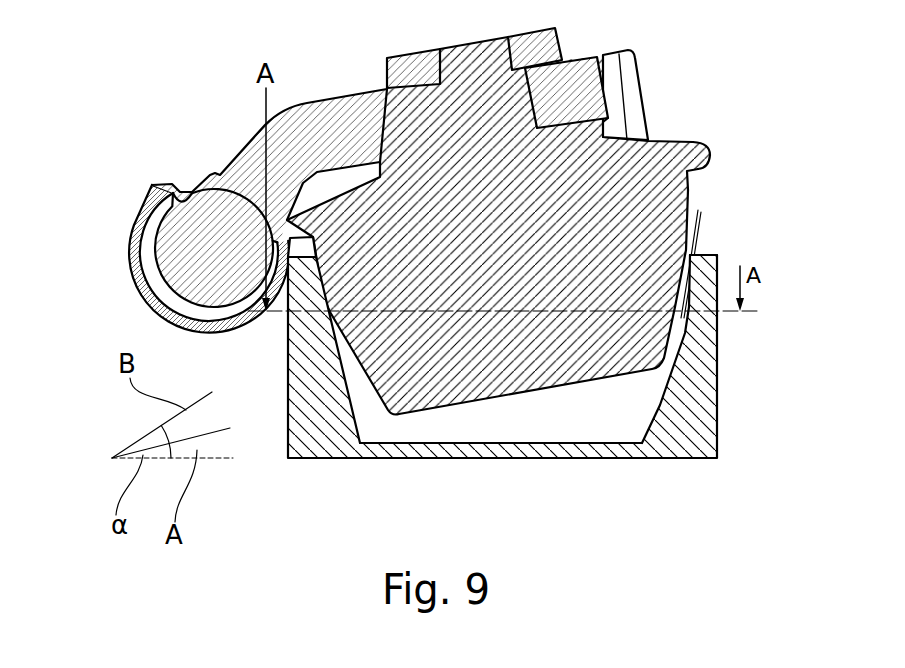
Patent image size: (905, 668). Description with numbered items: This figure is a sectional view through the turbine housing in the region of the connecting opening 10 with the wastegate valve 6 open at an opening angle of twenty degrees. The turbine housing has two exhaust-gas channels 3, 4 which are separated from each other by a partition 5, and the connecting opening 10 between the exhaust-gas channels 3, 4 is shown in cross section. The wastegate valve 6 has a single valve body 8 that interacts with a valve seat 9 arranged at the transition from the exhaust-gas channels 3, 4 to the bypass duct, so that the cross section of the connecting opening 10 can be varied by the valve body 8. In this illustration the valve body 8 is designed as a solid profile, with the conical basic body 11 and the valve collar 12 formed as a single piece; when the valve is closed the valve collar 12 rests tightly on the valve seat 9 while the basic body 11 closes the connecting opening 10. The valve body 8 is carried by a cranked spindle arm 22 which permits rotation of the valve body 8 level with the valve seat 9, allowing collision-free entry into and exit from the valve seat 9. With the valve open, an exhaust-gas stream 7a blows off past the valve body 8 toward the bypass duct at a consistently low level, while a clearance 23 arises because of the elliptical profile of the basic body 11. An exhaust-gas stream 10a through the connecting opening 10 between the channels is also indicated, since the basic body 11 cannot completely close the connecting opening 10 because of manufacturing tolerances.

The cranked spindle arm 22 is at (341, 112).
The wastegate valve 6 is at (655, 74).
The valve collar 12 is at (701, 148).
The valve body 8 is at (689, 178).
The exhaust-gas stream 7a is at (702, 214).
The valve seat 9 is at (693, 284).
The clearance 23 is at (690, 284).
The basic body 11 is at (503, 288).
The partition 5 is at (298, 399).
The exhaust-gas channel 4 is at (655, 413).
The exhaust-gas channel 3 is at (717, 523).
The connecting opening 10 is at (458, 428).
The exhaust-gas stream 10a is at (608, 427).